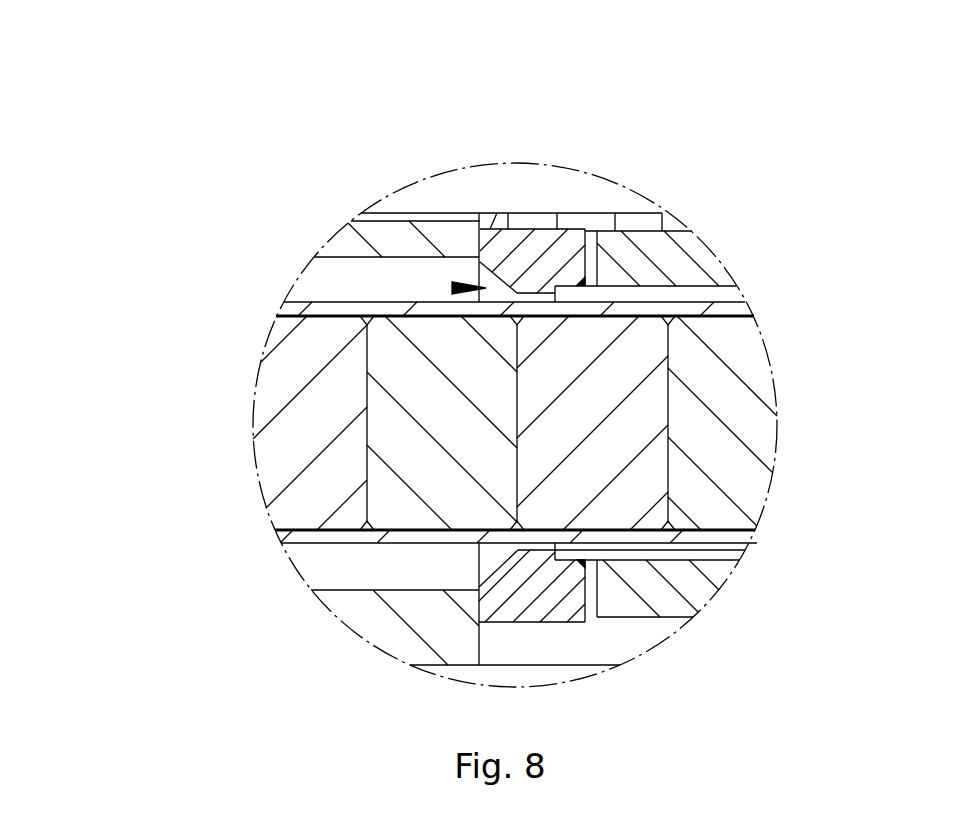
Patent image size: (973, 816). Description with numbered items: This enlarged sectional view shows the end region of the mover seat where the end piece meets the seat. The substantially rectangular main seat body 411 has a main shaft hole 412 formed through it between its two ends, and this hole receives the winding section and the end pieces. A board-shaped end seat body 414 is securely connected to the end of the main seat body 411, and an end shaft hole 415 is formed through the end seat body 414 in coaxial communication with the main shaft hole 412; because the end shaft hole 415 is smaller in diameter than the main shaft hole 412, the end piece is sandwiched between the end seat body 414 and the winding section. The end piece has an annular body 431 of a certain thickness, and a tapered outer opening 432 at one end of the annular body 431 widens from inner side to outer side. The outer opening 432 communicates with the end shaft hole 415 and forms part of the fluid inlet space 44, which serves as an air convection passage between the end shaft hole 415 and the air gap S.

The main shaft hole 412 is at (672, 228).
The main seat body 411 is at (672, 220).
The annular body 431 is at (542, 250).
The tapered outer opening 432 is at (491, 277).
The fluid inlet space 44 is at (452, 288).
The end seat body 414 is at (347, 248).
The end shaft hole 415 is at (315, 287).
The air gap S is at (683, 300).